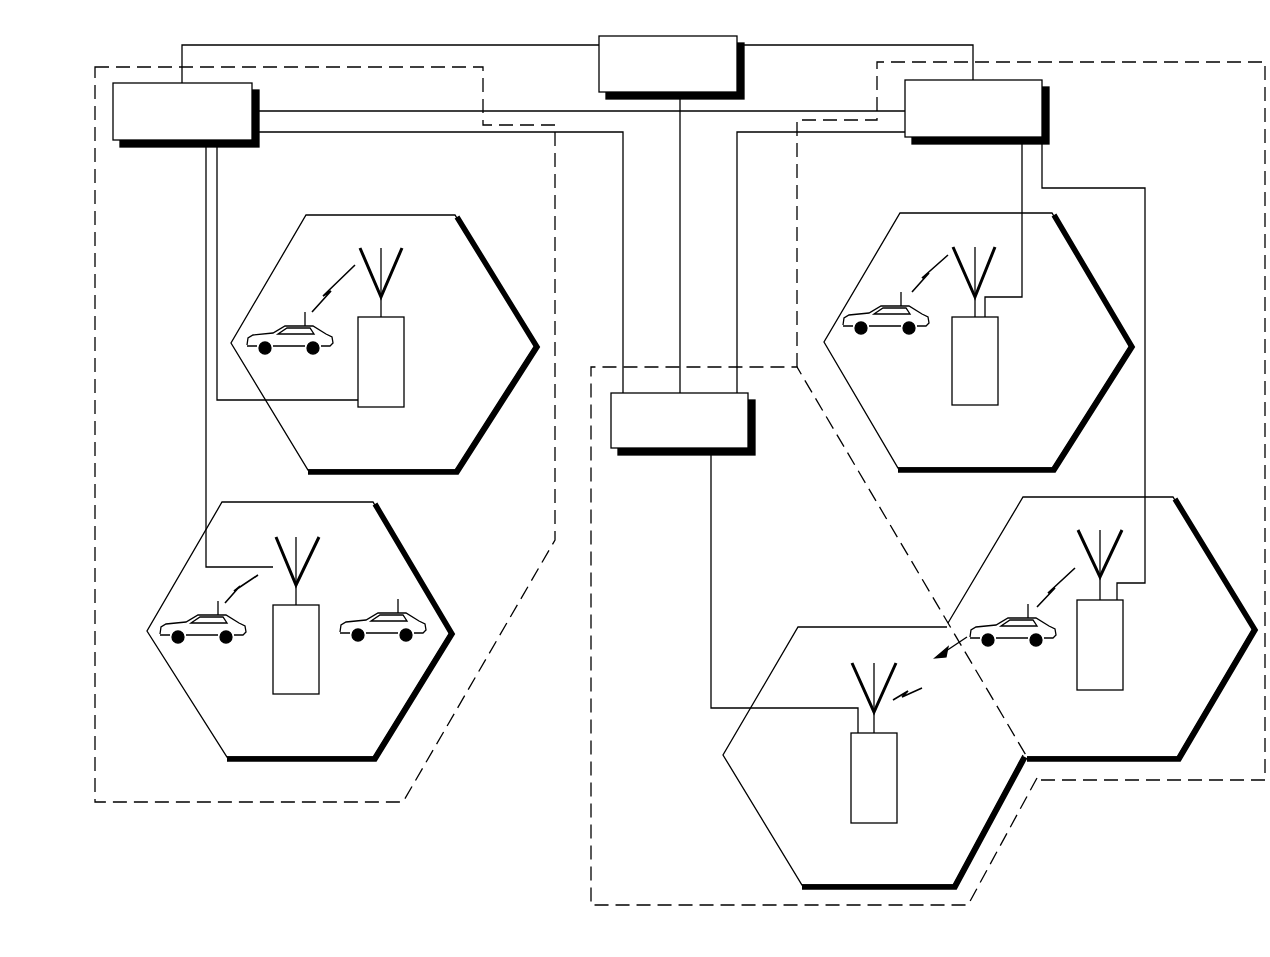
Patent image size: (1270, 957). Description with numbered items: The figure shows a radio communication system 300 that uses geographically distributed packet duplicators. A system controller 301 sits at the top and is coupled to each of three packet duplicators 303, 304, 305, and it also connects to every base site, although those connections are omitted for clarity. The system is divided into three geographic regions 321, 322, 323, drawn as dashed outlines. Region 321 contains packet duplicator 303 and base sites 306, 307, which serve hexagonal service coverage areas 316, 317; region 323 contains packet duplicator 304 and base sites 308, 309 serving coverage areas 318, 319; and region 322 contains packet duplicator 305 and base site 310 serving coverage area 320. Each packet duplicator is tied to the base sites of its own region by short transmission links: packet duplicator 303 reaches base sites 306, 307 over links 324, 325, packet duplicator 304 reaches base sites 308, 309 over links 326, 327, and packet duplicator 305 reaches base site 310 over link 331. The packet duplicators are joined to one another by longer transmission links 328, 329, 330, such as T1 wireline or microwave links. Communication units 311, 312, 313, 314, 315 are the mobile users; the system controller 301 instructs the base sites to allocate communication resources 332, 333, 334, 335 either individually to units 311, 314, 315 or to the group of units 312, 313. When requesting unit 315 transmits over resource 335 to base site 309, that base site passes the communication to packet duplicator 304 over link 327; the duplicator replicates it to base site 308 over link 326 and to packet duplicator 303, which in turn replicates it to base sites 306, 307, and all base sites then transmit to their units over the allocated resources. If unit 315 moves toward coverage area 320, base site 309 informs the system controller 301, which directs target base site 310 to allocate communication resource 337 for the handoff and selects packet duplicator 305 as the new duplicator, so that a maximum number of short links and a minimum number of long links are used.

The radio communication system 300 is at (508, 808).
The system controller 301 is at (744, 74).
The packet duplicator 303 is at (143, 147).
The packet duplicator 304 is at (1049, 115).
The packet duplicator 305 is at (742, 455).
The base site 306 is at (404, 393).
The base site 307 is at (319, 681).
The base site 308 is at (998, 391).
The base site 309 is at (1123, 676).
The base site 310 is at (897, 791).
The communication unit 311 is at (285, 356).
The communication unit 312 is at (200, 645).
The communication unit 313 is at (387, 614).
The communication unit 314 is at (875, 311).
The communication unit 315 is at (1038, 648).
The service coverage area 316 is at (487, 260).
The service coverage area 317 is at (408, 557).
The service coverage area 318 is at (915, 212).
The service coverage area 319 is at (1212, 557).
The service coverage area 320 is at (793, 638).
The geographic region 321 is at (95, 470).
The geographic region 322 is at (591, 685).
The geographic region 323 is at (1140, 781).
The transmission link 324 is at (206, 457).
The transmission link 325 is at (217, 212).
The transmission link 326 is at (1021, 168).
The transmission link 327 is at (1146, 270).
The transmission link 328 is at (623, 292).
The transmission link 329 is at (737, 174).
The transmission link 330 is at (352, 110).
The transmission link 331 is at (711, 574).
The communication resource 332 is at (310, 310).
The communication resource 333 is at (226, 601).
The communication resource 334 is at (947, 258).
The communication resource 335 is at (1046, 598).
The communication resource 337 is at (922, 691).